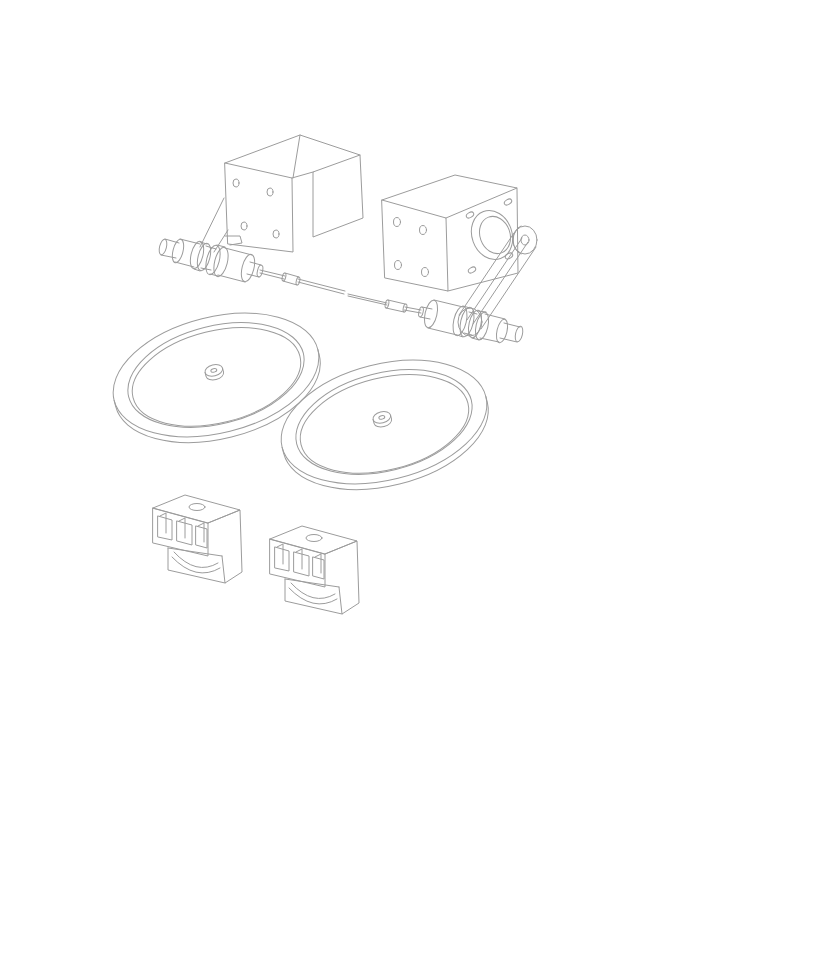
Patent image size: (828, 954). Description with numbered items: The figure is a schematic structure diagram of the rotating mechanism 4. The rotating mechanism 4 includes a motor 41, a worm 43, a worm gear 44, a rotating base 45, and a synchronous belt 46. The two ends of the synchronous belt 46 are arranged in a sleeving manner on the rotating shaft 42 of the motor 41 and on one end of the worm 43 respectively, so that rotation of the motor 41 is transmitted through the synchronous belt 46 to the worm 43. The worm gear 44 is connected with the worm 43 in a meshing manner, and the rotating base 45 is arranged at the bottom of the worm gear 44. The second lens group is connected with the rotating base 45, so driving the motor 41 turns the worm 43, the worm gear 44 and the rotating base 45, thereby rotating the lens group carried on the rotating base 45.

The rotating mechanism 4 is at (417, 107).
The motor 41 is at (476, 166).
The rotating shaft 42 is at (562, 238).
The worm 43 is at (252, 289).
The worm gear 44 is at (142, 420).
The rotating base 45 is at (167, 588).
The synchronous belt 46 is at (535, 293).